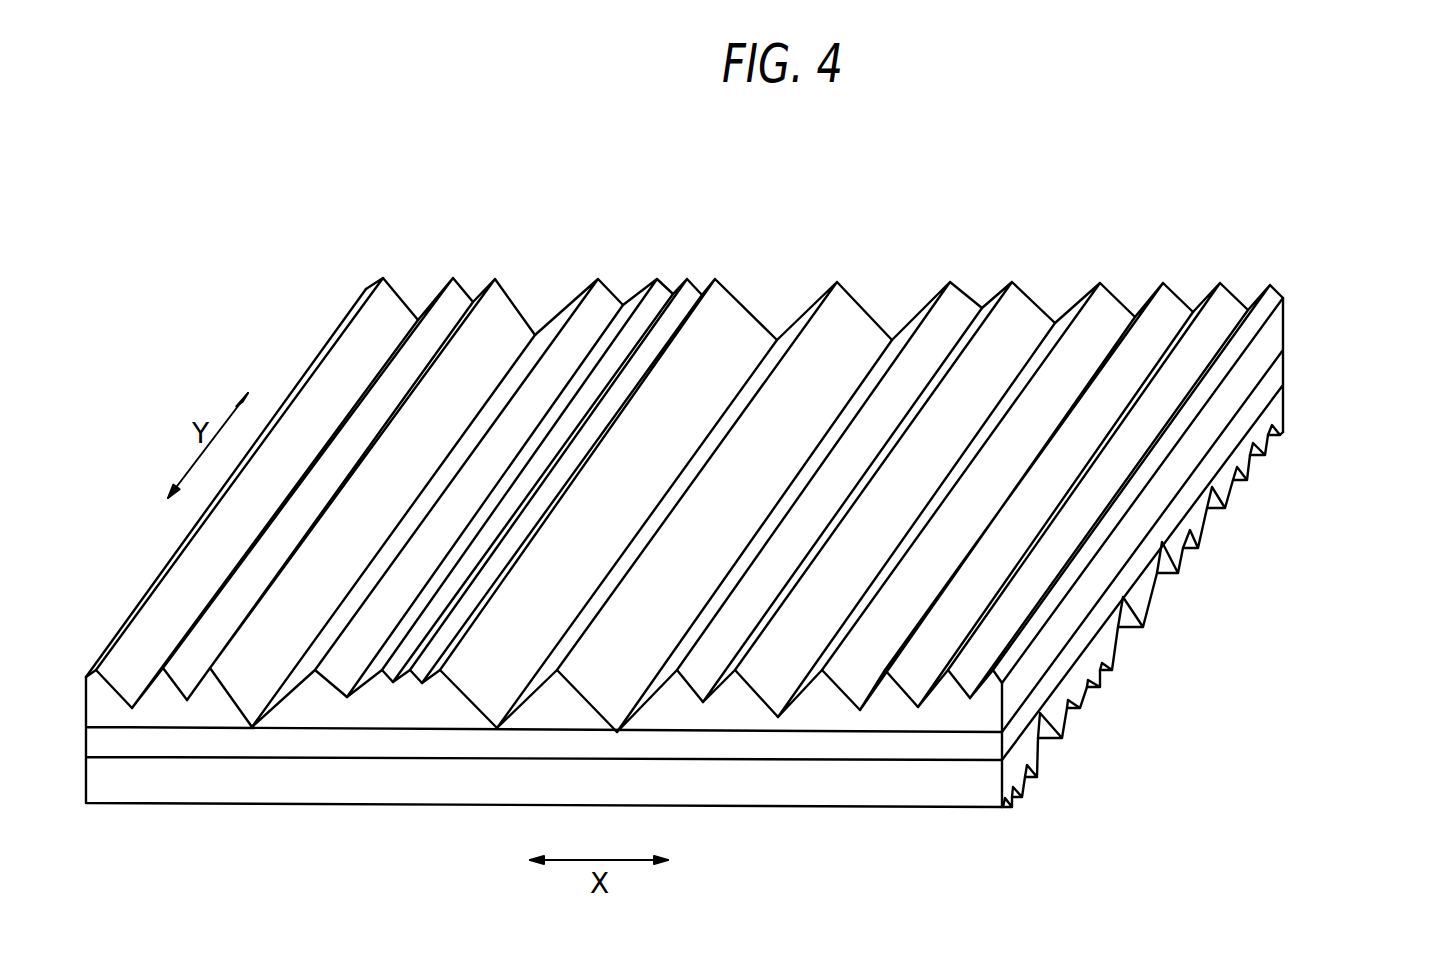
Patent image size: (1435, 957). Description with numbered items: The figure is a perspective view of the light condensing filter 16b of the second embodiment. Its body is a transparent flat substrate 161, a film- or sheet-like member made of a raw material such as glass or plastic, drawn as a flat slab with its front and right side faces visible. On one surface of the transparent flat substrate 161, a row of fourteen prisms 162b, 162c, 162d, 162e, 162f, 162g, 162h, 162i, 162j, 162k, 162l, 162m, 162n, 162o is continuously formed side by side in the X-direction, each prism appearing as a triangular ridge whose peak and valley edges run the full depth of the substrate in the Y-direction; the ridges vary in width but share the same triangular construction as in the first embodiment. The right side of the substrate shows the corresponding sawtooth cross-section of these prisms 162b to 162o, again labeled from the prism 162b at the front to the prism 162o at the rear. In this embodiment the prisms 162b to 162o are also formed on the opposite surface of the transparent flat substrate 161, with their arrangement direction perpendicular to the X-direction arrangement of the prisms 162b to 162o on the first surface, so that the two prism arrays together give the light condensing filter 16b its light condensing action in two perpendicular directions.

The light condensing filter 16b is at (1260, 195).
The transparent flat substrate 161 is at (262, 745).
The prism 162b is at (383, 276).
The prism 162c is at (453, 276).
The prism 162d is at (495, 277).
The prism 162e is at (598, 277).
The prism 162f is at (657, 277).
The prism 162g is at (687, 277).
The prism 162h is at (715, 277).
The prism 162i is at (837, 280).
The prism 162j is at (950, 280).
The prism 162k is at (1012, 280).
The prism 162l is at (1100, 281).
The prism 162m is at (1163, 281).
The prism 162n is at (1220, 281).
The prism 162o is at (1270, 283).